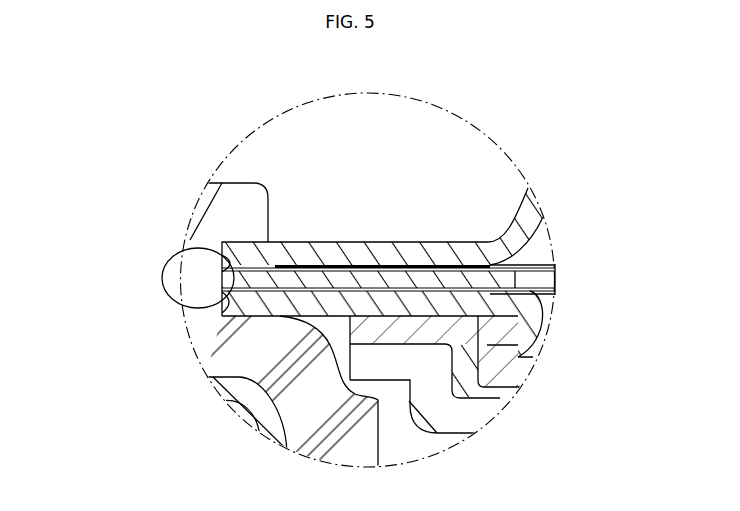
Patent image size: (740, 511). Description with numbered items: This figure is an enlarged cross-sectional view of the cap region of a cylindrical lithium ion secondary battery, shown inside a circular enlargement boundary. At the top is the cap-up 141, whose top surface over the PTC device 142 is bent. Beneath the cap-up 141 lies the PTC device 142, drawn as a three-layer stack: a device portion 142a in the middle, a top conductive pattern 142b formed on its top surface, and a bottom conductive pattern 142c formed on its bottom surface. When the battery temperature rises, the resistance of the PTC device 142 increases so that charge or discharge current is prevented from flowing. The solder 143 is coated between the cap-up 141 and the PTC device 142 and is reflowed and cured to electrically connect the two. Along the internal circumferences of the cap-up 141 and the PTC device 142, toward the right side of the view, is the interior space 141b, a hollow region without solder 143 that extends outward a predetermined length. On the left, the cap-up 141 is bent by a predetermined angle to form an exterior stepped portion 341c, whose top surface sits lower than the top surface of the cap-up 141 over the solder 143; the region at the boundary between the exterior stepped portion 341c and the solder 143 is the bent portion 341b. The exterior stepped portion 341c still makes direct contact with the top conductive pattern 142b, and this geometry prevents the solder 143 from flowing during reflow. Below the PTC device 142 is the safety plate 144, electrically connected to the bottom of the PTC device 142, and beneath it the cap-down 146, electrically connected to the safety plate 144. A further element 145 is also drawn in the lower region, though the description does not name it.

The cap-up 141 is at (387, 242).
The interior space 141b is at (497, 266).
The PTC device 142 is at (301, 280).
The device portion 142a is at (222, 278).
The top conductive pattern 142b is at (222, 245).
The bottom conductive pattern 142c is at (222, 306).
The solder 143 is at (457, 260).
The safety plate 144 is at (467, 303).
The support bracket 145 is at (470, 343).
The cap-down 146 is at (470, 413).
The bent portion 341b is at (273, 238).
The exterior stepped portion 341c is at (250, 262).